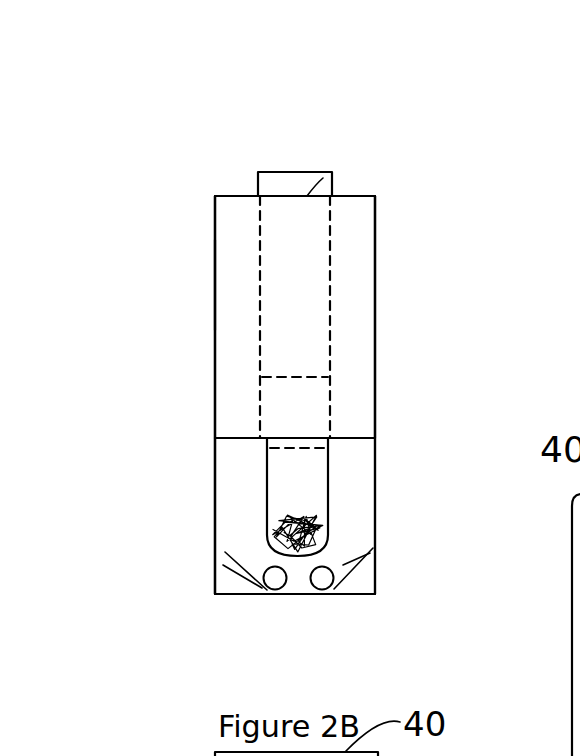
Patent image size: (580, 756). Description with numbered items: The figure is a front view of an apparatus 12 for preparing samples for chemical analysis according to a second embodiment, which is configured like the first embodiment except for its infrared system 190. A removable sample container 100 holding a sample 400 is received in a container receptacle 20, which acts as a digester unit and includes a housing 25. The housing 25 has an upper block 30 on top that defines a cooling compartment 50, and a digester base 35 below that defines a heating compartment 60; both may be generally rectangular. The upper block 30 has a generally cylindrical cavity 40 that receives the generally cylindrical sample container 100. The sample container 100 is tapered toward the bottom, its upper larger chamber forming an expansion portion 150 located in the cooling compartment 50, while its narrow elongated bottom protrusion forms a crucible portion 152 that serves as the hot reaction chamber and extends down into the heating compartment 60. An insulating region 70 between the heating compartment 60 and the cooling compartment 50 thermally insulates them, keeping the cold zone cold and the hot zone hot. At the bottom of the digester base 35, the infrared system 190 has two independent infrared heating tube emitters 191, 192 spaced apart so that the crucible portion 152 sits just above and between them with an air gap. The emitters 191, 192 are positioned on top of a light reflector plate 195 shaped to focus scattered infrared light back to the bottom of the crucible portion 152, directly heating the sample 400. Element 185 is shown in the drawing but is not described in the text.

The apparatus 12 is at (160, 100).
The container receptacle 20 is at (375, 213).
The housing 25 is at (375, 263).
The upper block 30 is at (215, 282).
The digester base 35 is at (215, 512).
The cavity 40 is at (333, 173).
The cooling compartment 50 is at (232, 245).
The heating compartment 60 is at (215, 468).
The insulating region 70 is at (348, 430).
The sample container 100 is at (293, 171).
The expansion portion 150 is at (333, 328).
The crucible portion 152 is at (327, 483).
The left support 185 is at (233, 560).
The infrared system 190 is at (265, 595).
The infrared heating tube emitter 191 is at (300, 597).
The infrared heating tube emitter 192 is at (342, 595).
The light reflector plate 195 is at (340, 563).
The sample 400 is at (328, 520).